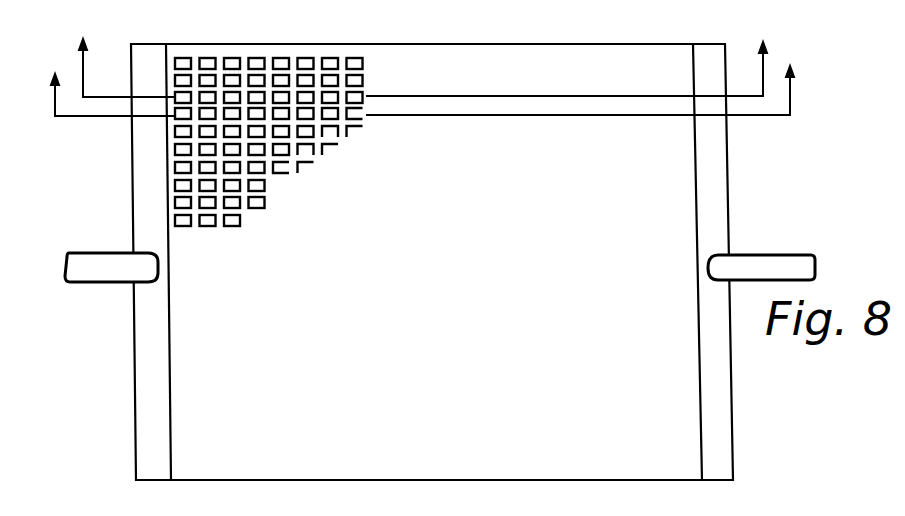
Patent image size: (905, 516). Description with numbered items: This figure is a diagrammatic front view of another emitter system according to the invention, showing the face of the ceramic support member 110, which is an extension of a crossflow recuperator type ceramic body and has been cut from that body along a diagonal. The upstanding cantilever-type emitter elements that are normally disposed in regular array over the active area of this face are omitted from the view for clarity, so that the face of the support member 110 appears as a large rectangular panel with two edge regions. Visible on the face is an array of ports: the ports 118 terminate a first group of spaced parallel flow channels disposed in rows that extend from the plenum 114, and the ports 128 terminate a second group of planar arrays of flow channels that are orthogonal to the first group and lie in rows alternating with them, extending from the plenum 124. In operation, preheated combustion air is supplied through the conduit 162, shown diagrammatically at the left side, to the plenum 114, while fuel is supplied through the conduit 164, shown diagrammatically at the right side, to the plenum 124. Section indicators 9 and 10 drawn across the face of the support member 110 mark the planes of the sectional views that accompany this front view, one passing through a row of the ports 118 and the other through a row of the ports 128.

The ceramic support member 110 is at (198, 366).
The plenum 114 is at (147, 57).
The plenum 124 is at (706, 53).
The ports 118 is at (182, 78).
The ports 128 is at (363, 97).
The conduit 162 is at (93, 283).
The conduit 164 is at (785, 255).
The section line 9- 9 is at (423, 55).
The section line 10- 10 is at (420, 79).